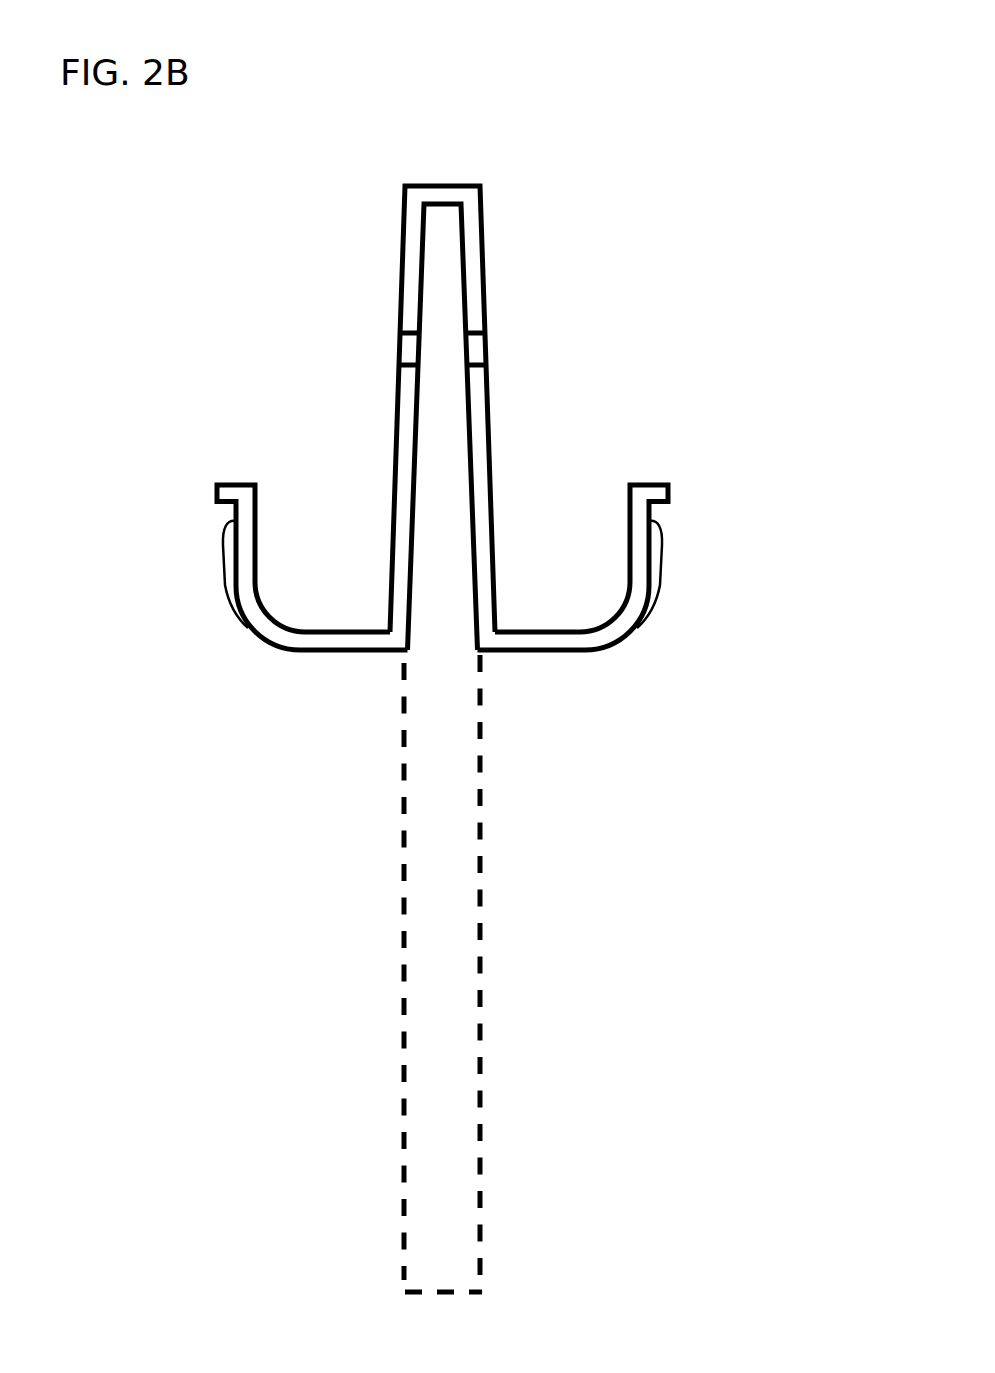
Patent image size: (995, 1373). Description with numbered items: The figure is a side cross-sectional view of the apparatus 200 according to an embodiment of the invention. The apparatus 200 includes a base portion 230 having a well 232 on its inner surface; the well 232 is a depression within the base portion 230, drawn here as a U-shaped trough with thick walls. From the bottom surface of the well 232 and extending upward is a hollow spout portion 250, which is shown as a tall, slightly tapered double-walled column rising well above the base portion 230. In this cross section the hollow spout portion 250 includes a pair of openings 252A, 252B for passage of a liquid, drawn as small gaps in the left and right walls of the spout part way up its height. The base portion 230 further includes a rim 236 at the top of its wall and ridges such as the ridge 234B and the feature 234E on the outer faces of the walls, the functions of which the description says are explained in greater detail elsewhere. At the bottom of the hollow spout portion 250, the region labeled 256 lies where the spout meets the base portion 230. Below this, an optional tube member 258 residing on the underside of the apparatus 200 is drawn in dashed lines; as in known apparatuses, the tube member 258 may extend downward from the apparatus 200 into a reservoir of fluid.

The apparatus 200 is at (526, 115).
The hollow spout portion 250 is at (477, 268).
The opening 252A is at (480, 350).
The opening 252B is at (407, 350).
The base portion 230 is at (673, 619).
The well 232 is at (562, 556).
The rim 236 is at (652, 494).
The ridge 234B is at (660, 543).
The first wall flap 234E is at (230, 543).
The base of strip 256 is at (438, 640).
The tube member 258 is at (445, 885).